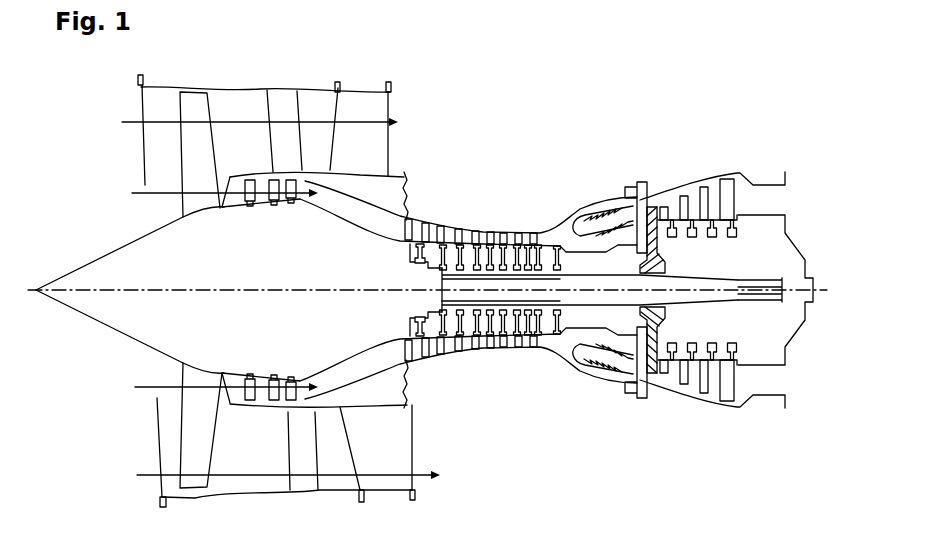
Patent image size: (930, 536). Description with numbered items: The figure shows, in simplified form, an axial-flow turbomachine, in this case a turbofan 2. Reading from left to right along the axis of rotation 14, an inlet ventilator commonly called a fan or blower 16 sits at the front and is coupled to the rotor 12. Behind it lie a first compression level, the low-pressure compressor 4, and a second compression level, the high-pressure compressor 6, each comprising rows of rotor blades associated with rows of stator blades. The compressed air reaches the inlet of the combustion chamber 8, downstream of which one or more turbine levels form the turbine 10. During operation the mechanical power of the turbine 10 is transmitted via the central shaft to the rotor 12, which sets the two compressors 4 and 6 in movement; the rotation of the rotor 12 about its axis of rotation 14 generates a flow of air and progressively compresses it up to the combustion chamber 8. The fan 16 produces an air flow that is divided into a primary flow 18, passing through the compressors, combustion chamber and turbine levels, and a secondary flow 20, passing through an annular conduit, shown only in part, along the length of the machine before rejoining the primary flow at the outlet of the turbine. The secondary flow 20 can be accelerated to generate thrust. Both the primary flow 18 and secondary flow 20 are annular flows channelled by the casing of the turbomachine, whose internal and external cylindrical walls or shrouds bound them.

The turbofan 2 is at (592, 104).
The low-pressure compressor 4 is at (247, 207).
The high-pressure compressor 6 is at (451, 230).
The combustion chamber 8 is at (583, 228).
The turbine 10 is at (720, 200).
The rotor 12 is at (102, 326).
The axis of rotation 14 is at (277, 293).
The fan 16 is at (197, 148).
The primary flow 18 is at (212, 289).
The secondary flow 20 is at (268, 297).